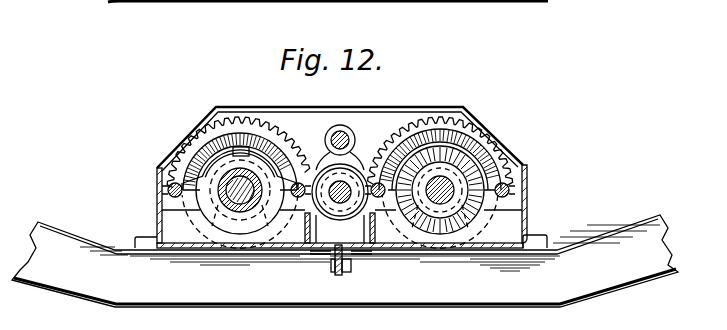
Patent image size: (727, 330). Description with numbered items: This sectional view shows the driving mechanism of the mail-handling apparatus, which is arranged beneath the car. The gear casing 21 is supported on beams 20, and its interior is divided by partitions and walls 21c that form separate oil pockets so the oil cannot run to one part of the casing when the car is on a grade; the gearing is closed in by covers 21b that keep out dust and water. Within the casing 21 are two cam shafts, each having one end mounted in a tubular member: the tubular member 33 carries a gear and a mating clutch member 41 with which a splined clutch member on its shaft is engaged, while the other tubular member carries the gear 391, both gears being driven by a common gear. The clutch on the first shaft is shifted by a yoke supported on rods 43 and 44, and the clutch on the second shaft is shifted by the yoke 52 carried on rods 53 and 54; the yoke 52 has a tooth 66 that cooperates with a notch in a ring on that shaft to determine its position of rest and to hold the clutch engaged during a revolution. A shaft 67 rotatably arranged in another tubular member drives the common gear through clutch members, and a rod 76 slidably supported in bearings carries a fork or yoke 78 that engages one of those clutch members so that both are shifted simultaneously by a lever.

The beams 20 is at (345, 261).
The gear casing 21 is at (158, 218).
The covers 21b is at (411, 107).
The partitions and walls 21c is at (304, 238).
The tubular member 33 is at (485, 141).
The gear 391 is at (198, 140).
The clutch member 41 is at (463, 160).
The rod 43 is at (527, 172).
The rod 44 is at (383, 198).
The yoke 52 is at (200, 162).
The rod 53 is at (157, 188).
The rod 54 is at (303, 157).
The tooth 66 is at (241, 148).
The shaft 67 is at (345, 185).
The rod 76 is at (344, 134).
The fork or yoke 78 is at (326, 135).